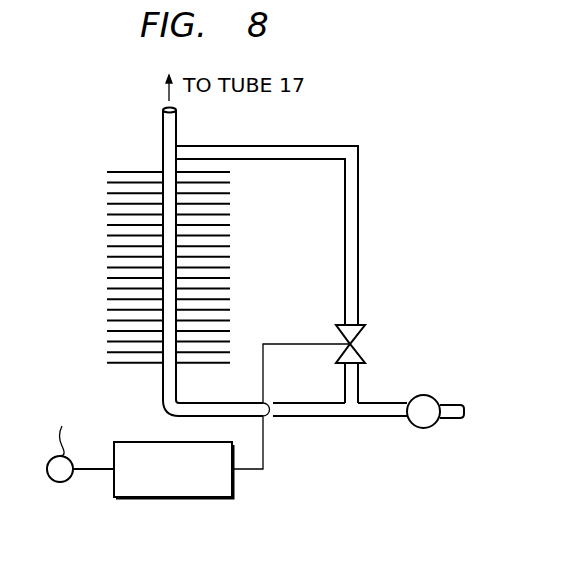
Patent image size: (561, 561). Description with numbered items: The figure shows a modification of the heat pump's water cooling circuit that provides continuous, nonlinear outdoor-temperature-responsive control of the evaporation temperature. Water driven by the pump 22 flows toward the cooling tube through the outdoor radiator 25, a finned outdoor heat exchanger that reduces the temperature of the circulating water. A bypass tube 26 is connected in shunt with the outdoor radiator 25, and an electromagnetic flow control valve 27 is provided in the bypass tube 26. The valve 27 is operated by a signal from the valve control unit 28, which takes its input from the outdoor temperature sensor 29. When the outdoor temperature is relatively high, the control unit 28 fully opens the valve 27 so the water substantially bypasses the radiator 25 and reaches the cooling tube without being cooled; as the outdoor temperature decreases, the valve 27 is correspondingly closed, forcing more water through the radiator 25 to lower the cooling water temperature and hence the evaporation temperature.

The pump 22 is at (417, 429).
The outdoor radiator 25 is at (235, 261).
The bypass tube 26 is at (357, 227).
The electromagnetic flow control valve 27 is at (361, 338).
The valve control unit 28 is at (233, 486).
The outdoor temperature sensor 29 is at (60, 482).